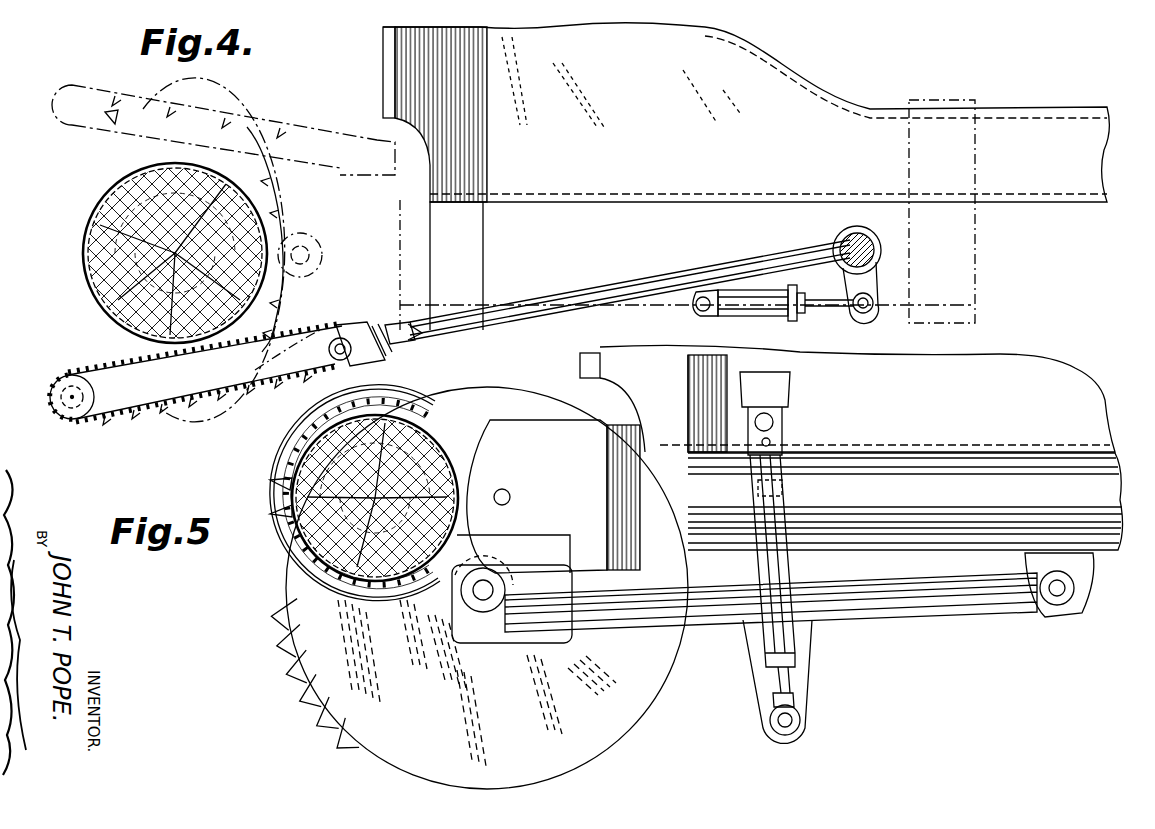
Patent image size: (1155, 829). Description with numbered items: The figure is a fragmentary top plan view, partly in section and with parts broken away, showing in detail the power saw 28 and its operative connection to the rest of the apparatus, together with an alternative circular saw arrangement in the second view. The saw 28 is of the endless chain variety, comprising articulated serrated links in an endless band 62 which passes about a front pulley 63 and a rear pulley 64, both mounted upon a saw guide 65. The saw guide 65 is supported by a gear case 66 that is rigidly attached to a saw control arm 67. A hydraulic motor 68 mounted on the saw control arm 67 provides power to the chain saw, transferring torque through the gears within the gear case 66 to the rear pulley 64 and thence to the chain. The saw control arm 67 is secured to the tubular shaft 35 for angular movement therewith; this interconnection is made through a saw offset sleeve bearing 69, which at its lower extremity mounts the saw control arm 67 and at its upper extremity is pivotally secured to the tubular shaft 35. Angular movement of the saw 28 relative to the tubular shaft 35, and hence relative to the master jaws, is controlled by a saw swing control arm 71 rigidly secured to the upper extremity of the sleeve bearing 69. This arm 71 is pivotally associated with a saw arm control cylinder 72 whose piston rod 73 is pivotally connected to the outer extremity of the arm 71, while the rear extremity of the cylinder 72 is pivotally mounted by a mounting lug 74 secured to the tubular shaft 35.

The power saw 28 is at (87, 367).
The tubular shaft 35 is at (730, 217).
The endless band 62 is at (107, 418).
The front pulley 63 is at (68, 410).
The rear pulley 64 is at (328, 366).
The saw guide 65 is at (285, 333).
The gear case 66 is at (348, 330).
The saw control arm 67 is at (573, 293).
The hydraulic motor 68 is at (410, 355).
The saw offset sleeve bearing 69 is at (840, 228).
The saw swing control arm 71 is at (867, 282).
The saw arm control cylinder 72 is at (743, 317).
The piston rod 73 is at (832, 306).
The mounting lug 74 is at (690, 300).